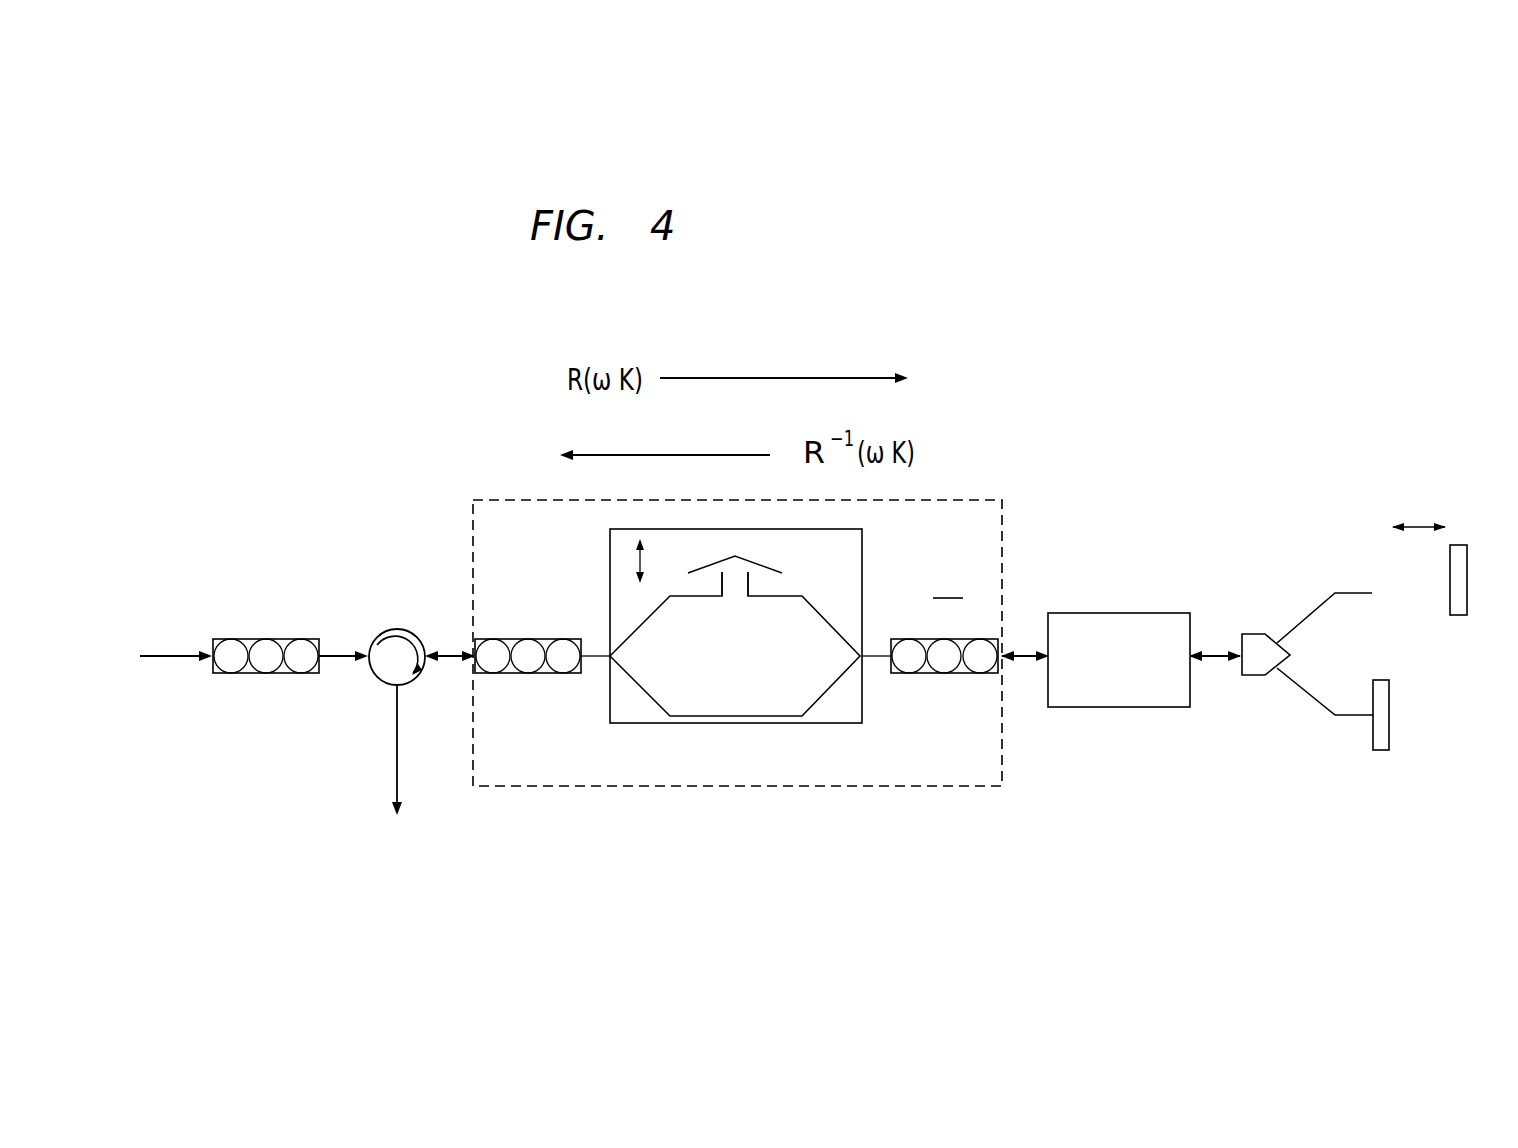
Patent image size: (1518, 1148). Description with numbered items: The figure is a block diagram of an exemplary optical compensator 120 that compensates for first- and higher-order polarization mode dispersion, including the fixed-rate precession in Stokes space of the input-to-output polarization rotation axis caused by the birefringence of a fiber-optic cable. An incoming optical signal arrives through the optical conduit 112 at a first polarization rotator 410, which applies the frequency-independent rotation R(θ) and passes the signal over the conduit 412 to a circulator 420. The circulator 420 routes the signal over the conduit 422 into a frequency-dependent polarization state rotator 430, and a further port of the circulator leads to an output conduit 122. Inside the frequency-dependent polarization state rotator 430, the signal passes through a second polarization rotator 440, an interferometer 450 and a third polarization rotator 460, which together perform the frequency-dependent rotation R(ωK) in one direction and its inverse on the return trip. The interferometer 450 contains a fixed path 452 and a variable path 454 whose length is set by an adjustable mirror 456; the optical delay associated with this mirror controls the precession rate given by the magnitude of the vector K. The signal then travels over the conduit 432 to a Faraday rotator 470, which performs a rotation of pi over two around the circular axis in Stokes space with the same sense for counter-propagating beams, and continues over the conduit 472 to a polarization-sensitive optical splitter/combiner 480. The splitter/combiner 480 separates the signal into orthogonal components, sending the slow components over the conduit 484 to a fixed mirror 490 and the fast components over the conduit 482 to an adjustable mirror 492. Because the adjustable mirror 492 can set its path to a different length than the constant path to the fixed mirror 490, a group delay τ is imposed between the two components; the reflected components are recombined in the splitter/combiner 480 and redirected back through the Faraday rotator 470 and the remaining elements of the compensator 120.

The optical compensator 120 is at (1176, 432).
The optical conduit 112 is at (157, 661).
The first polarization rotator 410 is at (252, 674).
The optical conduit 412 is at (337, 661).
The circulator 420 is at (397, 628).
The optical conduit 422 is at (452, 652).
The output optical signal 122 is at (397, 770).
The frequency-dependent polarization state rotator 430 is at (737, 787).
The second polarization rotator 440 is at (519, 674).
The interferometer 450 is at (862, 578).
The fixed path 452 is at (705, 716).
The variable path 454 is at (683, 598).
The adjustable mirror 456 is at (777, 570).
The third polarization rotator 460 is at (930, 674).
The optical conduit 432 is at (1025, 650).
The Faraday rotator 470 is at (1103, 707).
The optical conduit 472 is at (1216, 650).
The polarization-sensitive optical splitter/combiner 480 is at (1255, 676).
The conduit 482 is at (1314, 608).
The conduit 484 is at (1340, 716).
The fixed mirror 490 is at (1381, 751).
The adjustable mirror 492 is at (1458, 616).